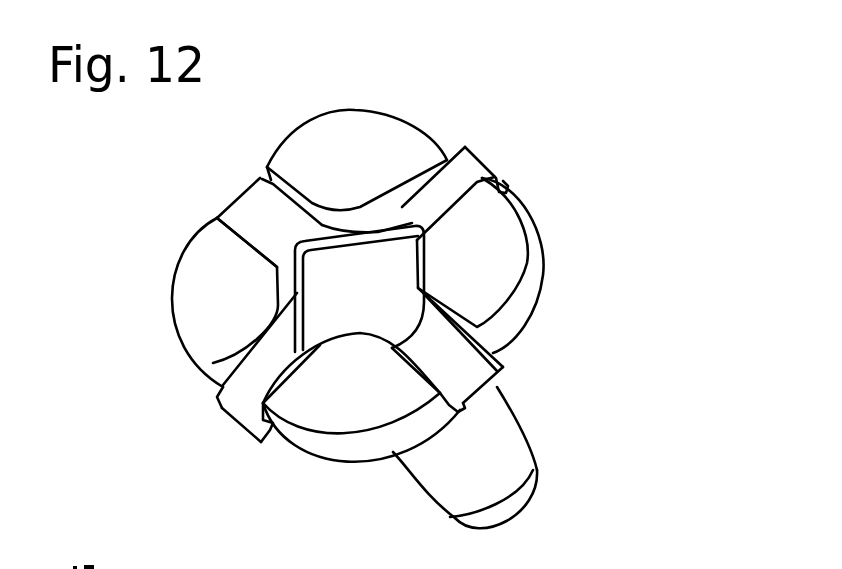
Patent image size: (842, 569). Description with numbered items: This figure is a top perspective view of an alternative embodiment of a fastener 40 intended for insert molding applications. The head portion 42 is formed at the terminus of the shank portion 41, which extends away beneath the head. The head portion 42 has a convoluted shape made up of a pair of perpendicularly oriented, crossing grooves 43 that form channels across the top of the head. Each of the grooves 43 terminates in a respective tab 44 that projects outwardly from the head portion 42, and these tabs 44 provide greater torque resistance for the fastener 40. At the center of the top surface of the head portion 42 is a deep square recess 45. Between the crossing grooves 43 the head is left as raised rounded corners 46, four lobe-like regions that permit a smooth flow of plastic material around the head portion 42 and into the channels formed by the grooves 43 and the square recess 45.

The fastener 40 is at (665, 190).
The shank portion 41 is at (448, 491).
The head portion 42 is at (160, 218).
The grooves 43 is at (253, 208).
The tabs 44 is at (252, 179).
The central deep square recess 45 is at (400, 235).
The raised rounded corners 46 is at (348, 111).